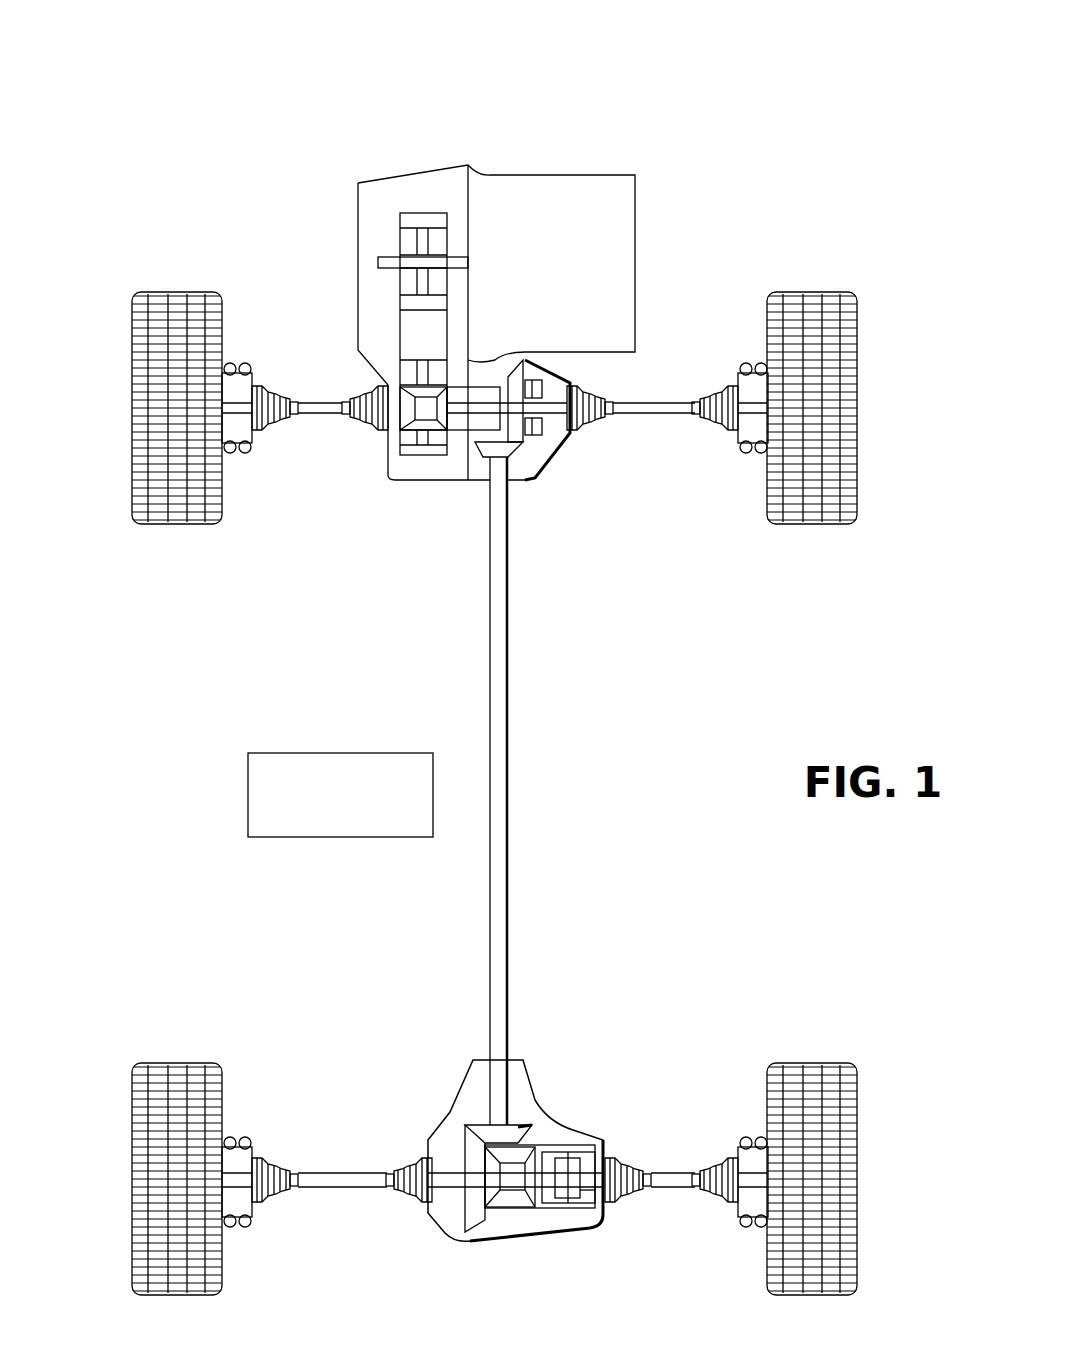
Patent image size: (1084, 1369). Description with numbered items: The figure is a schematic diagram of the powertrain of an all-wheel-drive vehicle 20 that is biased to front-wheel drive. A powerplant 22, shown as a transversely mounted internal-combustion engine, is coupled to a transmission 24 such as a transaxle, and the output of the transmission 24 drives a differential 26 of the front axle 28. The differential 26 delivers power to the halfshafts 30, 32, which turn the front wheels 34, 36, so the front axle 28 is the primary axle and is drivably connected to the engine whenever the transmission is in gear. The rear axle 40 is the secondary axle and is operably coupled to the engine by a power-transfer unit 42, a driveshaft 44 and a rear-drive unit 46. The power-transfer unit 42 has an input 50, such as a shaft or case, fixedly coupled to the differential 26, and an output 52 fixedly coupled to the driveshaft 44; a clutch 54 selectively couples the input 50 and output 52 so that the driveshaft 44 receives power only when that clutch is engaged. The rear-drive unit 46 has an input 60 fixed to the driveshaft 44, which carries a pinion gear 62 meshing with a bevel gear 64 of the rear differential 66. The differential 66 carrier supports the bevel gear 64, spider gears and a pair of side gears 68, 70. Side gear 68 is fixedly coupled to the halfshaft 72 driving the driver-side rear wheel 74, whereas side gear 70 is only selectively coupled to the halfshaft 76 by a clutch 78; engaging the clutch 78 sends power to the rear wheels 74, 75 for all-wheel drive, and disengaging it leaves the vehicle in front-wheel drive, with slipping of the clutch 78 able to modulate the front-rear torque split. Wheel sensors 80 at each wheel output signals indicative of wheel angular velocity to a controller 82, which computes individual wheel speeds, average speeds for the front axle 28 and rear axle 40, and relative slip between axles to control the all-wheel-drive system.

The all-wheel-drive vehicle 20 is at (795, 66).
The powerplant 22 is at (570, 174).
The transmission 24 is at (432, 167).
The differential 26 is at (417, 433).
The front axle 28 is at (875, 267).
The halfshaft 30 is at (645, 402).
The halfshaft 32 is at (330, 402).
The front wheel 34 is at (130, 405).
The front wheel 36 is at (860, 405).
The rear axle 40 is at (875, 1041).
The power-transfer unit 42 is at (527, 508).
The driveshaft 44 is at (508, 778).
The rear-drive unit 46 is at (592, 1080).
The input 50 is at (487, 390).
The output 52 is at (527, 480).
The clutch 54 is at (548, 430).
The input 60 is at (500, 1082).
The pinion gear 62 is at (522, 1142).
The bevel gear 64 is at (470, 1245).
The differential 66 is at (589, 1232).
The side gear 68 is at (490, 1170).
The side gear 70 is at (537, 1170).
The halfshaft 72 is at (350, 1173).
The rear wheel 74 is at (130, 1190).
The rear wheel 75 is at (860, 1190).
The halfshaft 76 is at (672, 1173).
The clutch 78 is at (585, 1195).
The wheel sensor 80 is at (236, 452).
The controller 82 is at (340, 752).